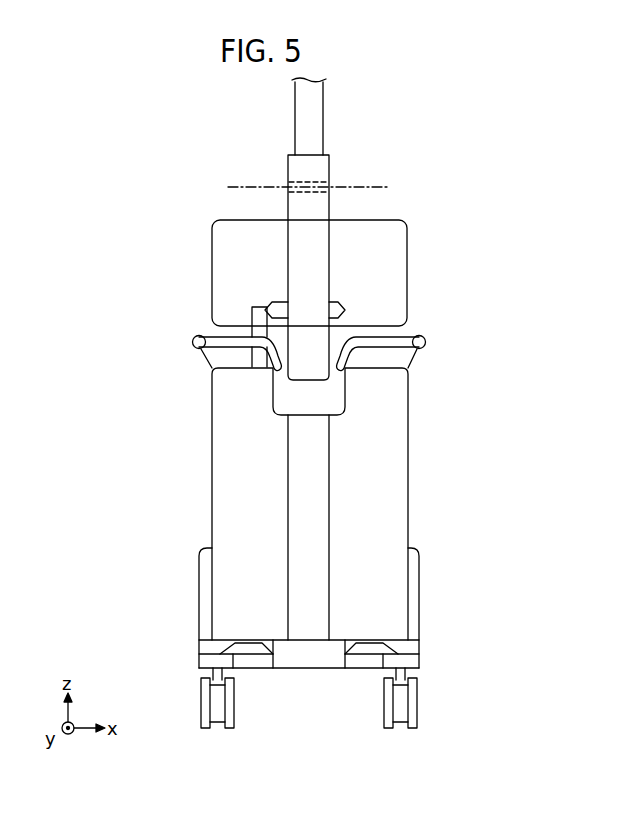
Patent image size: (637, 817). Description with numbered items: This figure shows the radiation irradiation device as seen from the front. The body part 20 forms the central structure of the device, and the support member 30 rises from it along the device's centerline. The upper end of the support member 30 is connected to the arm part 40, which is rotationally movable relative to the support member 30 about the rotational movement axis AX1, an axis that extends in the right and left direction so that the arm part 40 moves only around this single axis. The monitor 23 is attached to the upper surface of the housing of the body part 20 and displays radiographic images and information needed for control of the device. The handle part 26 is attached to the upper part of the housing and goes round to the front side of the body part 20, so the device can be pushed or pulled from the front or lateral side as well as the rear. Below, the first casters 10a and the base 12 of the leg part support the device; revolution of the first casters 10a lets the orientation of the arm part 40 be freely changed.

The arm part 40 is at (325, 108).
The support member 30 is at (323, 253).
The rotational movement axis AX1 is at (331, 188).
The monitor 23 is at (407, 240).
The handle part 26 is at (223, 342).
The body part 20 is at (408, 453).
The base plate 12 is at (198, 660).
The first casters 10a is at (199, 697).